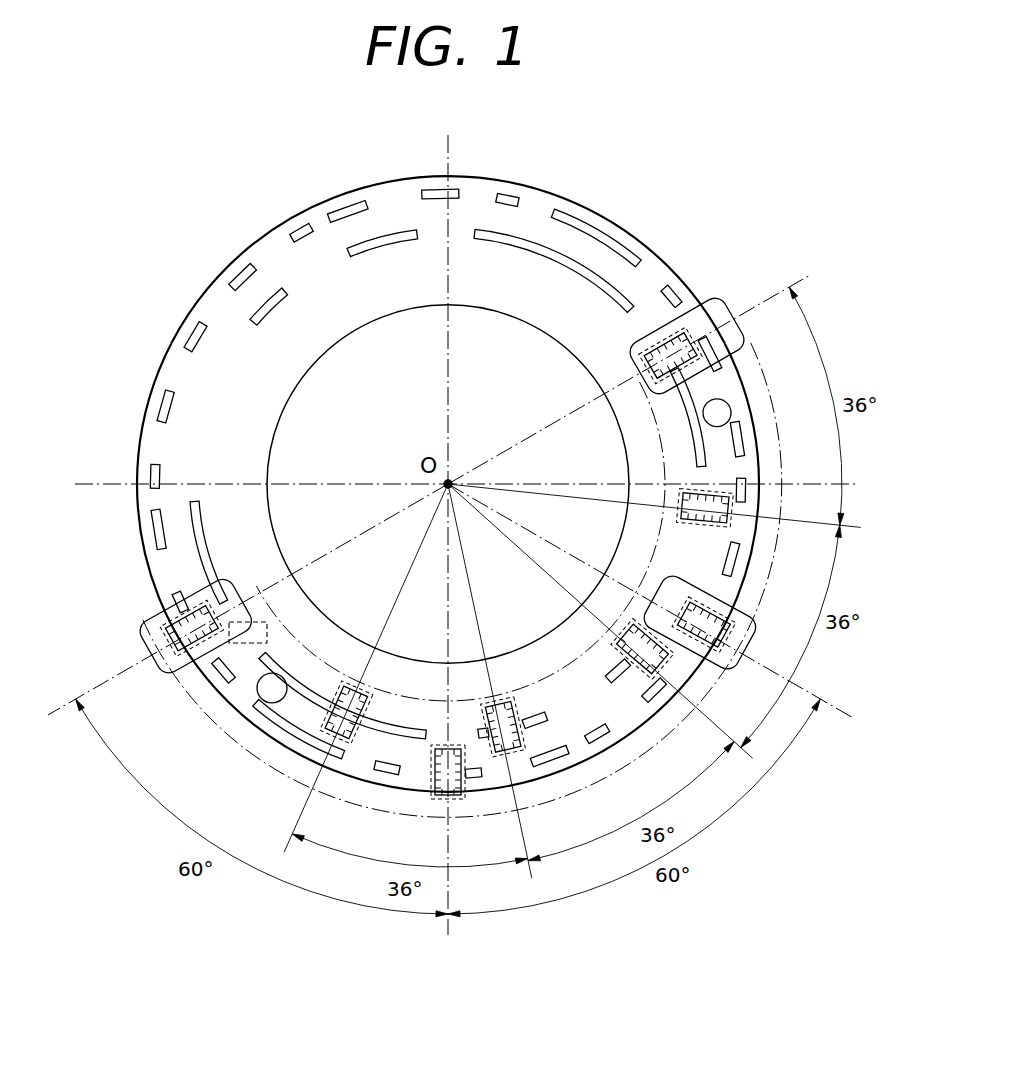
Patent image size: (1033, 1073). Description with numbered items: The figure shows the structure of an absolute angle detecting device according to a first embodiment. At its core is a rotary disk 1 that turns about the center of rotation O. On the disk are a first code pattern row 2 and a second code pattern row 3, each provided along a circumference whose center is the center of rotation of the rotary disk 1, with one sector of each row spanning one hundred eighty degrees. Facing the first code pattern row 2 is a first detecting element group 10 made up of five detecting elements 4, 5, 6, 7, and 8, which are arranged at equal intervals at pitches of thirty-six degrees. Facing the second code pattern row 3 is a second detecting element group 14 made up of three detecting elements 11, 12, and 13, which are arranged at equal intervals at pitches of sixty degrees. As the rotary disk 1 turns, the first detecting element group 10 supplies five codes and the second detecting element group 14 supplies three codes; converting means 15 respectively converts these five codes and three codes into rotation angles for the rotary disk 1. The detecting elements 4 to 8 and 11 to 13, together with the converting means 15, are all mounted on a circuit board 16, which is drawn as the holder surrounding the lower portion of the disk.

The rotary disk 1 is at (507, 190).
The first code pattern row 2 is at (527, 242).
The second code pattern row 3 is at (672, 283).
The detecting element 4 is at (704, 300).
The detecting element 5 is at (702, 495).
The detecting element 6 is at (641, 672).
The detecting element 7 is at (488, 755).
The detecting element 8 is at (322, 718).
The first detecting element group 10 is at (497, 544).
The detecting element 11 is at (730, 606).
The detecting element 12 is at (436, 772).
The detecting element 13 is at (156, 612).
The second detecting element group 14 is at (473, 704).
The converting means 15 is at (268, 630).
The circuit board 16 is at (194, 690).